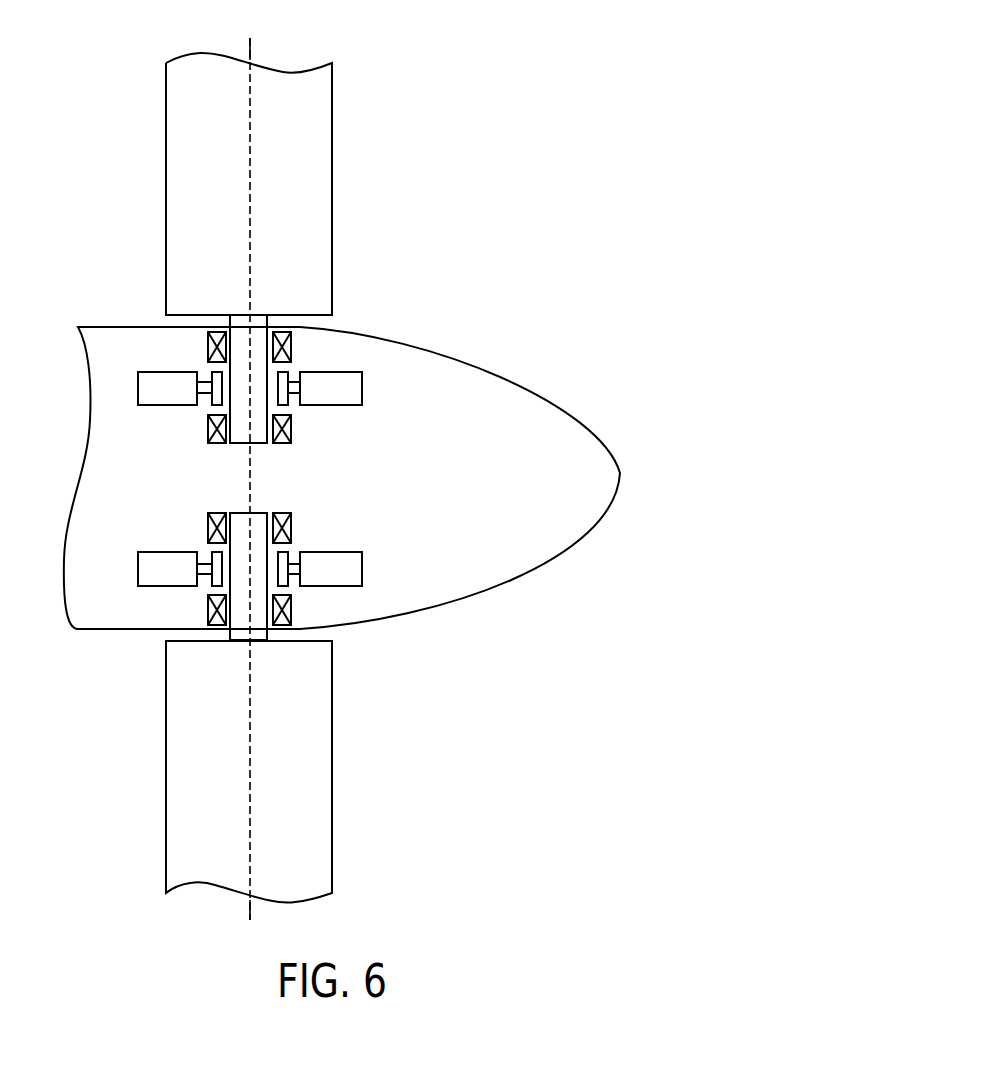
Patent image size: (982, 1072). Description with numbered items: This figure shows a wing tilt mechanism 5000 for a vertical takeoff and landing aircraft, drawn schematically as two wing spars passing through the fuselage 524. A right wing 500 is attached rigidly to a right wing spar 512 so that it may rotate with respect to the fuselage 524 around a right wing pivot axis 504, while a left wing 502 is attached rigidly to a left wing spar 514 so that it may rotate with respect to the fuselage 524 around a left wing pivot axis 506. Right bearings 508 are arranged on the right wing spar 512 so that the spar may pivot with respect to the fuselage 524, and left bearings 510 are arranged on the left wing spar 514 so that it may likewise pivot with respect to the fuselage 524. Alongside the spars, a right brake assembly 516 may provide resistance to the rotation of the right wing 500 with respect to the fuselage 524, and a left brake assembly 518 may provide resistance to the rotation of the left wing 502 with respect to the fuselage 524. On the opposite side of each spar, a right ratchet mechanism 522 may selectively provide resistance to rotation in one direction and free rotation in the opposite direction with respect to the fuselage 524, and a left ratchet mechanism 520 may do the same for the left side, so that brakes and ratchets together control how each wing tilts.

The wing tilt mechanism 5000 is at (575, 87).
The right wing 500 is at (313, 805).
The left wing 502 is at (317, 152).
The right wing pivot axis 504 is at (252, 770).
The left wing pivot axis 506 is at (252, 52).
The right bearings 508 is at (208, 518).
The left bearings 510 is at (208, 335).
The right wing spar 512 is at (257, 520).
The left wing spar 514 is at (257, 435).
The right brake assembly 516 is at (348, 568).
The left brake assembly 518 is at (348, 388).
The left ratchet mechanism 520 is at (143, 385).
The right ratchet mechanism 522 is at (148, 572).
The fuselage 524 is at (547, 398).